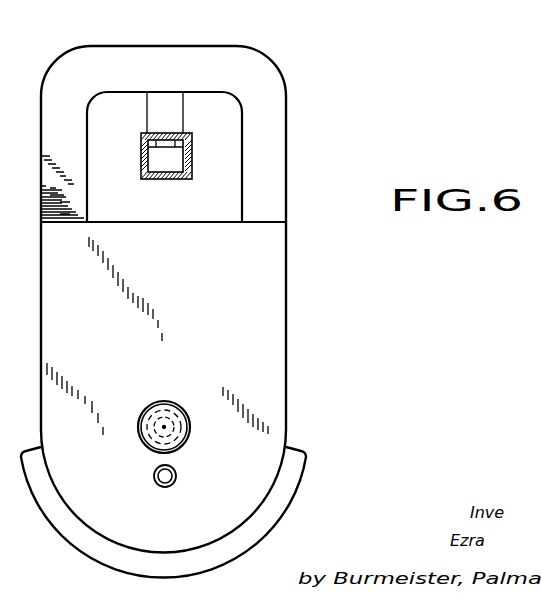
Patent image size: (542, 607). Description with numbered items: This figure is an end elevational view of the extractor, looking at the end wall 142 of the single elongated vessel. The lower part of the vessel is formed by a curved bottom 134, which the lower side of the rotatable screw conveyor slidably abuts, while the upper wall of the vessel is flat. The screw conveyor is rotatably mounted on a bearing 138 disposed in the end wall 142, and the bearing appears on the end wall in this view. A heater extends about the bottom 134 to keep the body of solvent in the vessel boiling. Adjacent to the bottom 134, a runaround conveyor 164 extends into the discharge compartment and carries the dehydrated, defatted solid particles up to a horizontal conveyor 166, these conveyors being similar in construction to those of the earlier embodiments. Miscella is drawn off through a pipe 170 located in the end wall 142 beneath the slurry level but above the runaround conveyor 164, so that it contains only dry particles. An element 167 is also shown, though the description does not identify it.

The curved bottom 134 is at (208, 542).
The bearing 138 is at (183, 410).
The end wall 142 is at (268, 307).
The runaround conveyor 164 is at (286, 145).
The horizontal conveyor 166 is at (157, 180).
The bottom cap 167 is at (295, 470).
The pipe 170 is at (152, 473).